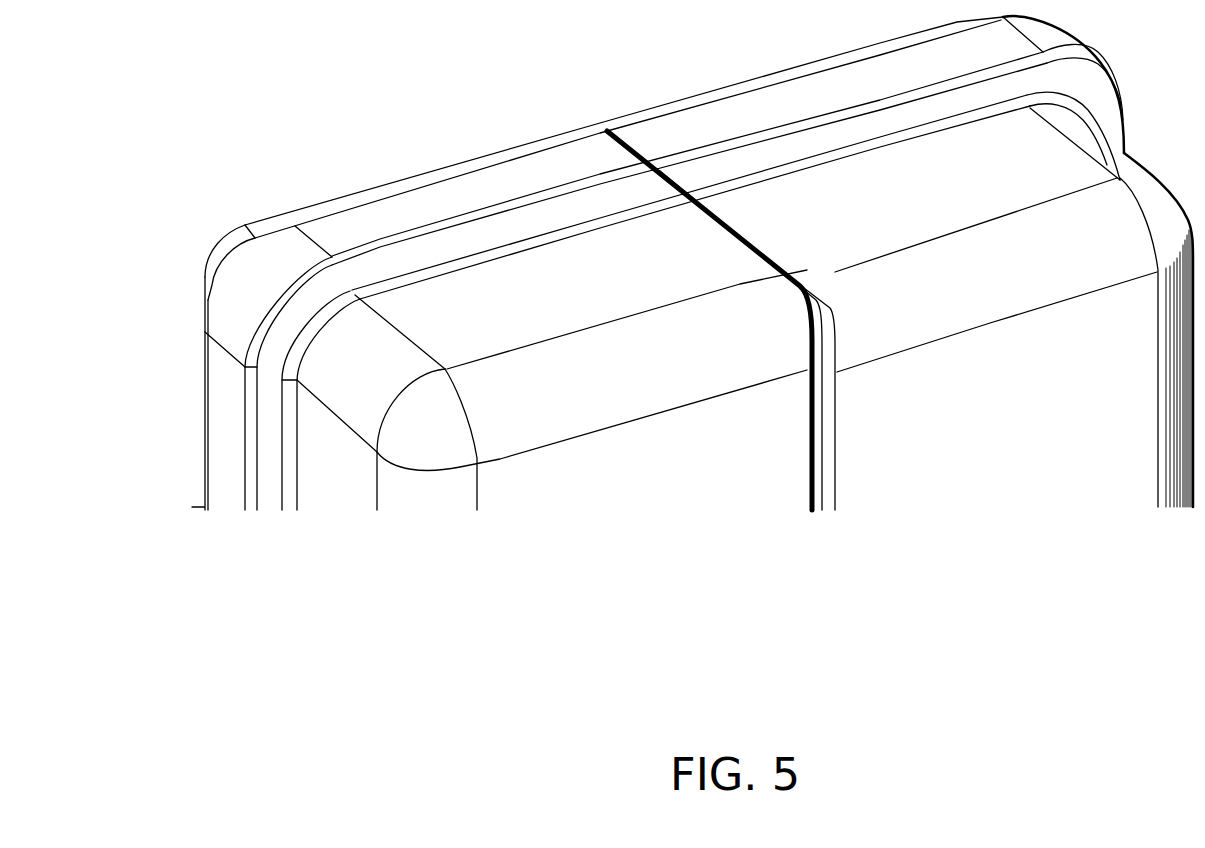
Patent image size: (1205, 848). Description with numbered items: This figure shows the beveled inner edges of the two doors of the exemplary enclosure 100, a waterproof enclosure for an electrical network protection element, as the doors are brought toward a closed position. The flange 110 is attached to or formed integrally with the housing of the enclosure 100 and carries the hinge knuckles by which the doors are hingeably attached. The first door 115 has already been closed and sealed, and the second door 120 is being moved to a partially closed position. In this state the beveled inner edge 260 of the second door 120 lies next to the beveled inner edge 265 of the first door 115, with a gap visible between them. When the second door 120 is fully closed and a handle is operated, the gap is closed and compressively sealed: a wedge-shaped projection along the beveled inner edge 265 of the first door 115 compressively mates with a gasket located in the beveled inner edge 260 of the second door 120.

The enclosure 100 is at (392, 627).
The flange 110 is at (670, 113).
The first door 115 is at (676, 487).
The second door 120 is at (1037, 432).
The beveled inner edge 260 is at (830, 428).
The beveled inner edge 265 is at (807, 446).